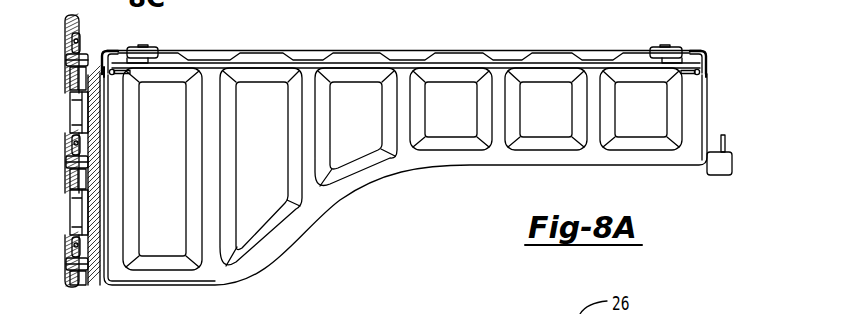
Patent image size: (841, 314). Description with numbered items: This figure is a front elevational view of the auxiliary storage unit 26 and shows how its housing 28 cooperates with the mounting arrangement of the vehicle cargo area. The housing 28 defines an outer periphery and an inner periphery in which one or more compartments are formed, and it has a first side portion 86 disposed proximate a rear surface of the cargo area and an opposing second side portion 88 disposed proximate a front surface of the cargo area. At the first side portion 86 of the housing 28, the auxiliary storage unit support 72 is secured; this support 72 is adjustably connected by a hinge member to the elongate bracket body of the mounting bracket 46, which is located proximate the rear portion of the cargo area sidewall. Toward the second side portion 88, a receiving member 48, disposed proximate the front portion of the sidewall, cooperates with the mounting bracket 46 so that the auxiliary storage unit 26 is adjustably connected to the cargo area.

The auxiliary storage unit 26 is at (560, 32).
The housing 28 is at (405, 62).
The mounting bracket 46 is at (62, 256).
The receiving member 48 is at (722, 178).
The auxiliary storage unit support 72 is at (97, 180).
The first side portion 86 is at (111, 69).
The second side portion 88 is at (704, 97).